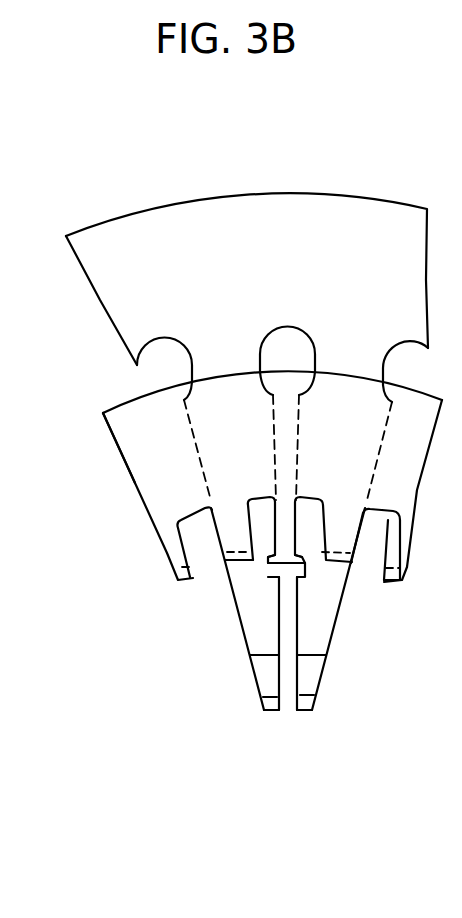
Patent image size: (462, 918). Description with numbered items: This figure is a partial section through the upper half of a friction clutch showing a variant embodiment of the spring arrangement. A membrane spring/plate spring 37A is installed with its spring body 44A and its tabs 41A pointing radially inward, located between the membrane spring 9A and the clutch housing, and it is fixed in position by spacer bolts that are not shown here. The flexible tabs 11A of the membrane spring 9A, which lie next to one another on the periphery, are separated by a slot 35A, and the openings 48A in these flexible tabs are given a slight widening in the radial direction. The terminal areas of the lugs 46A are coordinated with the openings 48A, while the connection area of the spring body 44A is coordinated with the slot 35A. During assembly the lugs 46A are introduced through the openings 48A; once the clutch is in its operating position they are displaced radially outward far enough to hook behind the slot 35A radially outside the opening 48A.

The membrane spring 9A is at (285, 222).
The membrane spring/plate spring 37A is at (103, 412).
The spring body 44A is at (145, 472).
The tabs 41A is at (238, 538).
The lugs 46A is at (287, 550).
The openings 48A is at (307, 580).
The slot 35A is at (287, 633).
The flexible tabs 11A is at (278, 680).